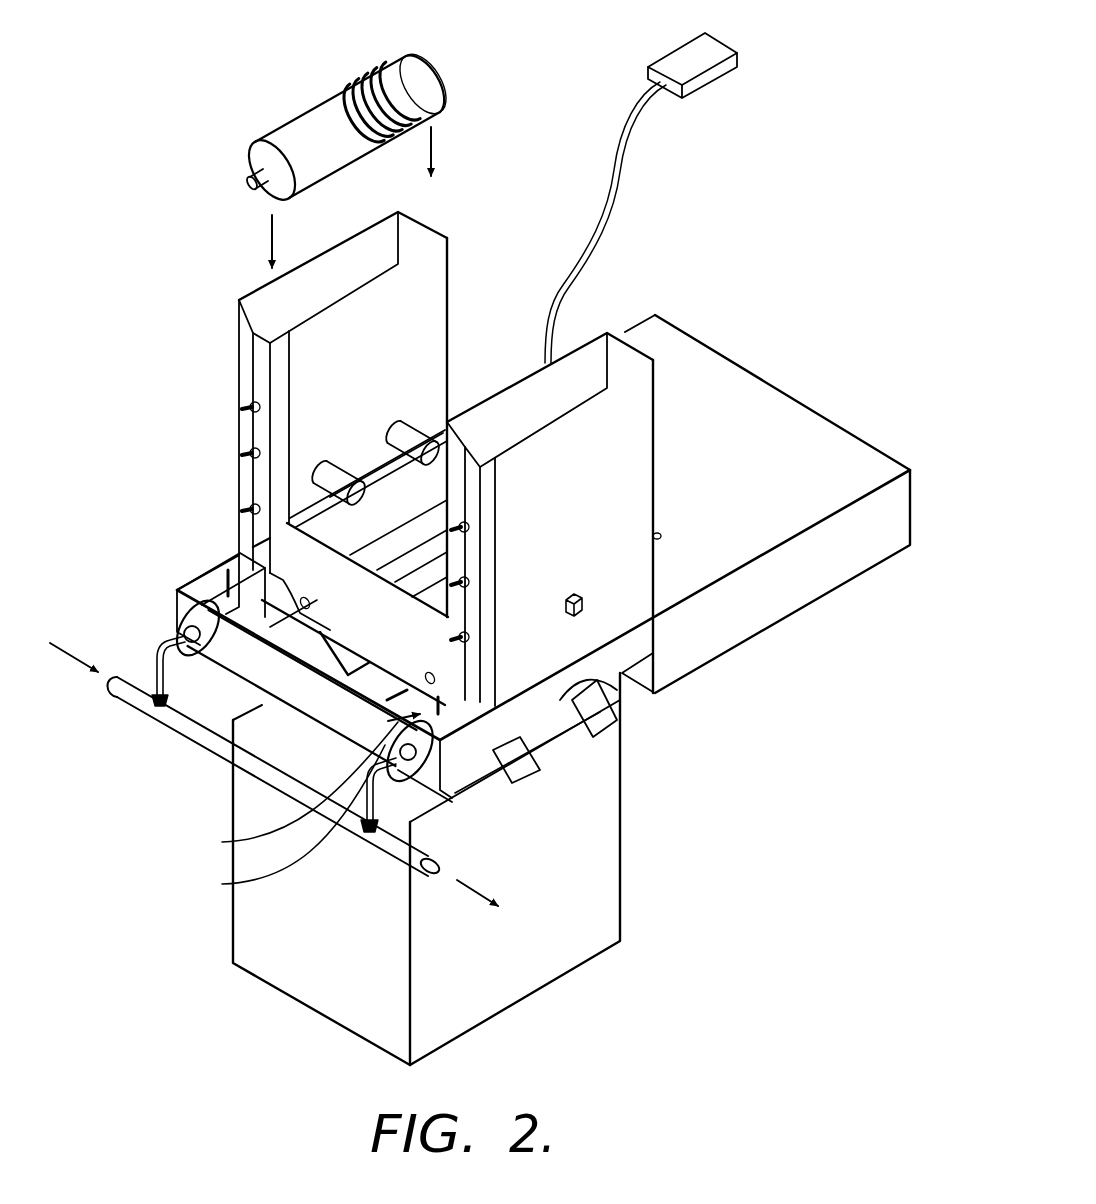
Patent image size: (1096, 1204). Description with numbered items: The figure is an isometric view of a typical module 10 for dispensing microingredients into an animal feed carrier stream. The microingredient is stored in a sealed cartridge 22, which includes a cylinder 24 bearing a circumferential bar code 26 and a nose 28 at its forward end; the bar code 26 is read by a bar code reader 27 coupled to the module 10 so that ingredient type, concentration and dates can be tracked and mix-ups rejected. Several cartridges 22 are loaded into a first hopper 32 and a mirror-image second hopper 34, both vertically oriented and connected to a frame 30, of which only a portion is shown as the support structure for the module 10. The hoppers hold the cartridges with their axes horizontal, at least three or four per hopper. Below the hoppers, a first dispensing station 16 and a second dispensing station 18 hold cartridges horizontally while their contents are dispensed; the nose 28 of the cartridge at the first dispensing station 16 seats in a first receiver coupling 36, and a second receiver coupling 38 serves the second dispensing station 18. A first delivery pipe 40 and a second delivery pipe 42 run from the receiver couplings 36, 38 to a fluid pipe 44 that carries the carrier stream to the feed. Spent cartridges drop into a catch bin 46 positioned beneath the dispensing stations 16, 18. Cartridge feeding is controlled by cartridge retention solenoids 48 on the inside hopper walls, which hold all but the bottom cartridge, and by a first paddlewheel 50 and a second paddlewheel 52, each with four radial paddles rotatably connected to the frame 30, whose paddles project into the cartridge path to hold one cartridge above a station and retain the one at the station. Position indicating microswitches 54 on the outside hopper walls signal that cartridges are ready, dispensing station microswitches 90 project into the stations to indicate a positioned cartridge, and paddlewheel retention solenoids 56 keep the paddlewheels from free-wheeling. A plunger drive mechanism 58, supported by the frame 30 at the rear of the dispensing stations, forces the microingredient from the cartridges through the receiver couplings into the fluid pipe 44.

The module 10 is at (118, 382).
The first dispensing station 16 is at (218, 530).
The second dispensing station 18 is at (405, 762).
The cartridge 22 is at (288, 65).
The cylinder 24 is at (290, 130).
The bar code 26 is at (397, 62).
The bar code reader 27 is at (712, 74).
The nose 28 is at (250, 180).
The frame 30 is at (622, 660).
The first hopper 32 is at (440, 262).
The second hopper 34 is at (637, 408).
The first receiver coupling 36 is at (178, 592).
The second receiver coupling 38 is at (460, 790).
The first delivery pipe 40 is at (158, 642).
The second delivery pipe 42 is at (395, 828).
The fluid pipe 44 is at (196, 745).
The catch bin 46 is at (622, 890).
The cartridge retention solenoids 48 is at (410, 440).
The first paddlewheel 50 is at (413, 495).
The second paddlewheel 52 is at (440, 612).
The position indicating microswitches 54 is at (588, 605).
The paddlewheel retention solenoids 56 is at (603, 723).
The plunger drive mechanism 58 is at (845, 565).
The dispensing station microswitches 90 is at (610, 695).